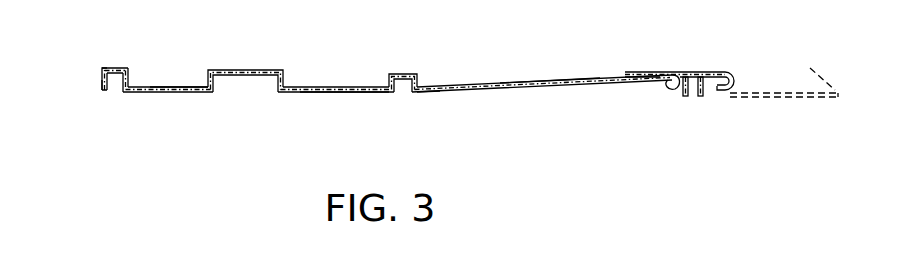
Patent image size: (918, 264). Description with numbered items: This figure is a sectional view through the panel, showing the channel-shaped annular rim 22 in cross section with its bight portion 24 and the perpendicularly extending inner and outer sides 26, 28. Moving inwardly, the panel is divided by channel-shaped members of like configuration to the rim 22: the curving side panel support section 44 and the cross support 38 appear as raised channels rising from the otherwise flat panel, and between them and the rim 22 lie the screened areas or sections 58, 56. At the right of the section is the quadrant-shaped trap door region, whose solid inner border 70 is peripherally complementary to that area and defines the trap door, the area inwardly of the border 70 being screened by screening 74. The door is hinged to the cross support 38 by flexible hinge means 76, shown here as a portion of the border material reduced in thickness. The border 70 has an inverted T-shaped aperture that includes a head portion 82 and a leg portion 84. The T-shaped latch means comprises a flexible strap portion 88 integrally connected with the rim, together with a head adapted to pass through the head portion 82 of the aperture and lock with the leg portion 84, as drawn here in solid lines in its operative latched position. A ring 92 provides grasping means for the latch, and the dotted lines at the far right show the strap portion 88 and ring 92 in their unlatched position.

The channel-shaped annular rim 22 is at (103, 68).
The bight portion 24 is at (120, 68).
The inner side 26 is at (129, 78).
The outer side 28 is at (101, 80).
The side panel support section 44 is at (250, 70).
The screened section 58 is at (187, 92).
The screened section 56 is at (343, 92).
The cross support 38 is at (403, 74).
The solid inner border 70 is at (437, 80).
The flexible hinge means 76 is at (418, 92).
The screening 74 is at (547, 81).
The head portion 82 is at (668, 88).
The leg portion 84 is at (686, 96).
The ring 92 is at (633, 72).
The flexible strap portion 88 is at (722, 72).